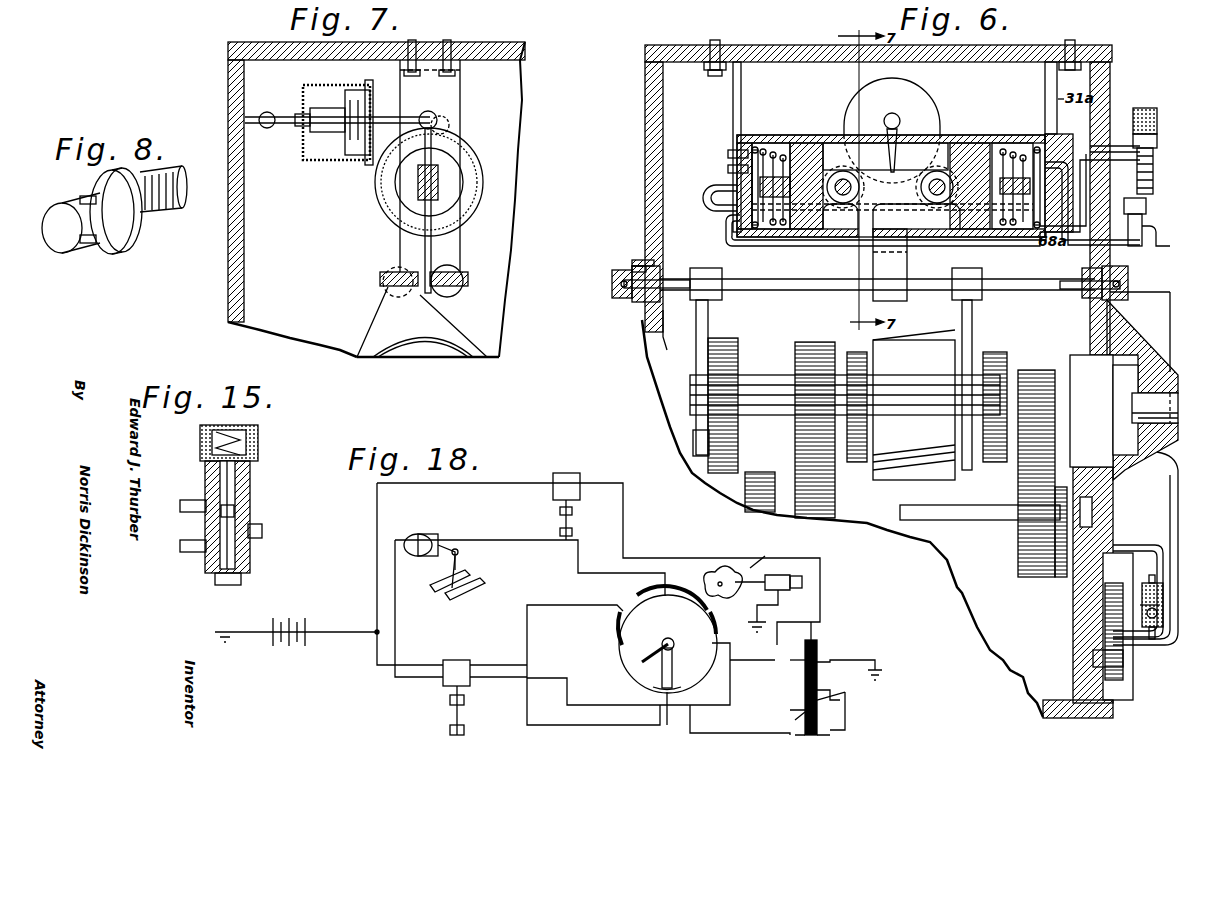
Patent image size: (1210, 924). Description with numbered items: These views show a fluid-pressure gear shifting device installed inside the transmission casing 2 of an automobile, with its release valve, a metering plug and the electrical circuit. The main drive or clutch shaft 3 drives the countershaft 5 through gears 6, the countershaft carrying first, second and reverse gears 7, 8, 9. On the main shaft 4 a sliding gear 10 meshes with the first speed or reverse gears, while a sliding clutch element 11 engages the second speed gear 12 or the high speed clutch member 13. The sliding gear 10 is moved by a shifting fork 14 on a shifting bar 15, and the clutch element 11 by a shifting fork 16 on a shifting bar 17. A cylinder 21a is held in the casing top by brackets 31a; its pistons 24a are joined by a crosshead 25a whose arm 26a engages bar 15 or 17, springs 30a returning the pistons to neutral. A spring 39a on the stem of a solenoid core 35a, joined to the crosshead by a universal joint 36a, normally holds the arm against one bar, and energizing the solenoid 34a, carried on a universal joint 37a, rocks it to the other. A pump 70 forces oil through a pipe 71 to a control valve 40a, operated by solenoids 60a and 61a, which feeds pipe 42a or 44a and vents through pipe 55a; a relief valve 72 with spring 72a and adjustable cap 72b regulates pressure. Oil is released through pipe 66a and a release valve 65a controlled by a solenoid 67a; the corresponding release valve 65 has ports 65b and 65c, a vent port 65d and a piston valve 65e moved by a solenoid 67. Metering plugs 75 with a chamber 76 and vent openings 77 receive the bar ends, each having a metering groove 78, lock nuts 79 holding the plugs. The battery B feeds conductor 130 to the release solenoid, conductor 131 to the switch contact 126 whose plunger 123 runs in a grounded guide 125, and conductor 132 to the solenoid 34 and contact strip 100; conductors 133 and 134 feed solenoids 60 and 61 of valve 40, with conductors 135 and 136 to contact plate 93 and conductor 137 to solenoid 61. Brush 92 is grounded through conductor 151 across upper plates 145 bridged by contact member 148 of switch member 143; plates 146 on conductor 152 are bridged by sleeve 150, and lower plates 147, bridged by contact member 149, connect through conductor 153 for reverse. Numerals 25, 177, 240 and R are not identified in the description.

In FIG. 6, the transmission casing 2 is at (648, 325).
In FIG. 7, the transmission casing 2 is at (228, 282).
In FIG. 6, the main drive or clutch shaft 3 is at (1150, 398).
In FIG. 6, the main shaft 4 is at (752, 375).
In FIG. 6, the countershaft 5 is at (975, 520).
In FIG. 6, the gears 6 is at (1018, 450).
In FIG. 6, the first gear 7 is at (765, 500).
In FIG. 6, the second gear 8 is at (820, 515).
In FIG. 6, the reverse gear 9 is at (720, 485).
In FIG. 6, the sliding gear 10 is at (728, 338).
In FIG. 6, the sliding clutch element 11 is at (915, 340).
In FIG. 6, the second speed gear 12 is at (812, 342).
In FIG. 6, the third or high speed clutch member 13 is at (995, 352).
In FIG. 6, the shifting fork 14 is at (696, 332).
In FIG. 6, the shifting bar 15 is at (790, 292).
In FIG. 7, the shifting bar 15 is at (463, 286).
In FIG. 6, the shifting fork 16 is at (972, 335).
In FIG. 7, the shifting fork 16 is at (375, 318).
In FIG. 6, the shifting bar 17 is at (1010, 292).
In FIG. 7, the shifting bar 17 is at (380, 280).
In FIG. 6, the cylinder 21a is at (980, 125).
In FIG. 7, the cylinder 21a is at (375, 190).
In FIG. 6, the pistons 24a is at (1010, 143).
In FIG. 7, the pistons 24a is at (470, 158).
In FIG. 7, the piston 25 is at (438, 185).
In FIG. 6, the crosshead 25a is at (898, 170).
In FIG. 6, the arms of the crosshead 26a is at (873, 268).
In FIG. 7, the arms of the crosshead 26a is at (431, 240).
In FIG. 6, the springs 30a is at (1037, 150).
In FIG. 6, the brackets 31a is at (741, 100).
In FIG. 18, the solenoid 34 is at (430, 535).
In FIG. 6, the solenoid 34a is at (920, 92).
In FIG. 7, the solenoid 34a is at (312, 160).
In FIG. 7, the solenoid core 35a is at (315, 132).
In FIG. 6, the ball and socket or universal joint connection 36a is at (890, 113).
In FIG. 7, the ball and socket or universal joint connection 36a is at (437, 118).
In FIG. 7, the ball and socket or universal joint 37a is at (275, 100).
In FIG. 7, the spring 39a is at (355, 140).
In FIG. 18, the control valve 40 is at (450, 718).
In FIG. 6, the control valve 40a is at (1153, 158).
In FIG. 6, the pipe 42a is at (1075, 160).
In FIG. 6, the pipe 44a is at (760, 248).
In FIG. 6, the pipe 55a is at (1110, 146).
In FIG. 18, the solenoid 60 is at (460, 660).
In FIG. 6, the solenoid 60a is at (1157, 112).
In FIG. 18, the solenoid 61 is at (465, 680).
In FIG. 6, the solenoid 61a is at (1157, 140).
In FIG. 15, the release valve 65 is at (250, 488).
In FIG. 18, the release valve 65 is at (560, 522).
In FIG. 6, the release valve 65a is at (1142, 222).
In FIG. 6, the port 65b is at (1156, 246).
In FIG. 15, the port 65b is at (182, 500).
In FIG. 15, the port 65c is at (182, 540).
In FIG. 15, the vent port 65d is at (262, 531).
In FIG. 15, the piston valve 65e is at (234, 512).
In FIG. 6, the pipe 66a is at (705, 196).
In FIG. 15, the solenoid 67 is at (258, 450).
In FIG. 18, the solenoid 67 is at (580, 478).
In FIG. 6, the solenoid 67a is at (1146, 206).
In FIG. 6, the pump 70 is at (1128, 655).
In FIG. 6, the pipe 71 is at (1170, 500).
In FIG. 6, the oil pressure relief valve 72 is at (1158, 632).
In FIG. 6, the spring 72a is at (1163, 608).
In FIG. 6, the adjustable cap 72b is at (1152, 575).
In FIG. 6, the metering plugs 75 is at (636, 266).
In FIG. 8, the metering plugs 75 is at (70, 240).
In FIG. 6, the chamber 76 is at (612, 284).
In FIG. 6, the discharge or vent openings 77 is at (630, 298).
In FIG. 8, the discharge or vent openings 77 is at (82, 198).
In FIG. 6, the metering groove 78 is at (1082, 268).
In FIG. 6, the lock nuts 79 is at (640, 260).
In FIG. 8, the lock nuts 79 is at (118, 250).
In FIG. 18, the rotary contact brush 92 is at (674, 655).
In FIG. 18, the contact plate 93 is at (681, 688).
In FIG. 18, the contact strip 100 is at (680, 596).
In FIG. 18, the plunger 123 is at (738, 592).
In FIG. 18, the guide 125 is at (775, 605).
In FIG. 18, the switch contact 126 is at (802, 582).
In FIG. 18, the conductor 130 is at (430, 483).
In FIG. 18, the conductor 131 is at (700, 558).
In FIG. 18, the conductor 132 is at (578, 558).
In FIG. 18, the conductor 133 is at (425, 648).
In FIG. 18, the conductor 134 is at (420, 677).
In FIG. 18, the conductor 135 is at (575, 725).
In FIG. 18, the conductor 136 is at (545, 605).
In FIG. 18, the conductor 137 is at (590, 705).
In FIG. 18, the switch member 143 is at (817, 650).
In FIG. 18, the upper contact plates 145 is at (797, 660).
In FIG. 18, the contact plates 146 is at (835, 711).
In FIG. 18, the lower contact plates 147 is at (812, 740).
In FIG. 18, the contact member 148 is at (831, 675).
In FIG. 18, the contact member 149 is at (785, 711).
In FIG. 18, the conducting sleeve 150 is at (840, 682).
In FIG. 18, the conductor 151 is at (754, 658).
In FIG. 18, the conductor 152 is at (750, 672).
In FIG. 18, the conductor 153 is at (715, 733).
In FIG. 18, the wire 177 is at (750, 688).
In FIG. 18, the lead 240 is at (811, 628).
In FIG. 18, the storage battery B is at (297, 618).
In FIG. 18, the relay contacts R is at (457, 581).